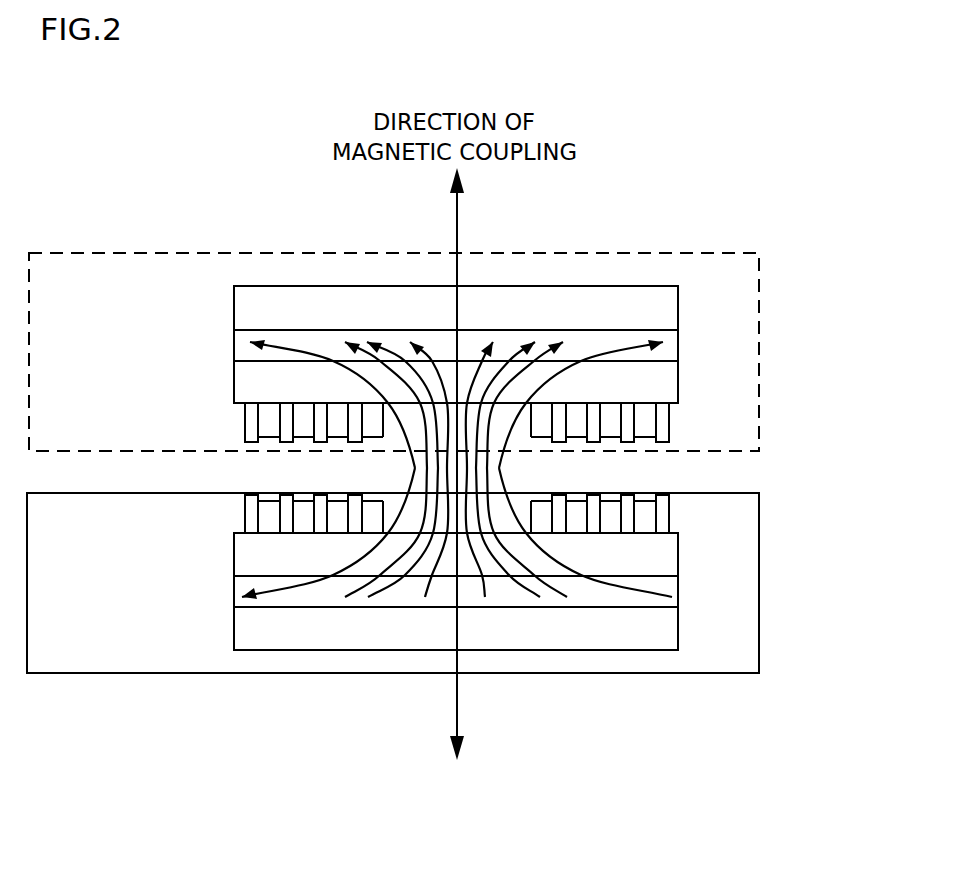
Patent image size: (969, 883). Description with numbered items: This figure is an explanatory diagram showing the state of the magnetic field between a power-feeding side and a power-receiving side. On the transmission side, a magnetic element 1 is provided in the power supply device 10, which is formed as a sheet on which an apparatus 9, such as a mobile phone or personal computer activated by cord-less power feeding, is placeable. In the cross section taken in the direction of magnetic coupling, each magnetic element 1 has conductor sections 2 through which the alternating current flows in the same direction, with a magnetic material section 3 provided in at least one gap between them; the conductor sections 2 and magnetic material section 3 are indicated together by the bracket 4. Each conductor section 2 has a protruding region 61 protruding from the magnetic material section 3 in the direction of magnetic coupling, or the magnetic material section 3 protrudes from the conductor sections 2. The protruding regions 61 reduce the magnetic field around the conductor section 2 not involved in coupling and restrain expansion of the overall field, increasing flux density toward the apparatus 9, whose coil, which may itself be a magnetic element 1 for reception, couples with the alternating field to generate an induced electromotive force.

The magnetic element 1 is at (650, 282).
The conductor section 2 is at (270, 419).
The magnetic material section 3 is at (287, 433).
The coil unit 4 is at (406, 494).
The apparatus 9 is at (603, 253).
The power supply device 10 is at (760, 532).
The protruding region 61 is at (678, 441).